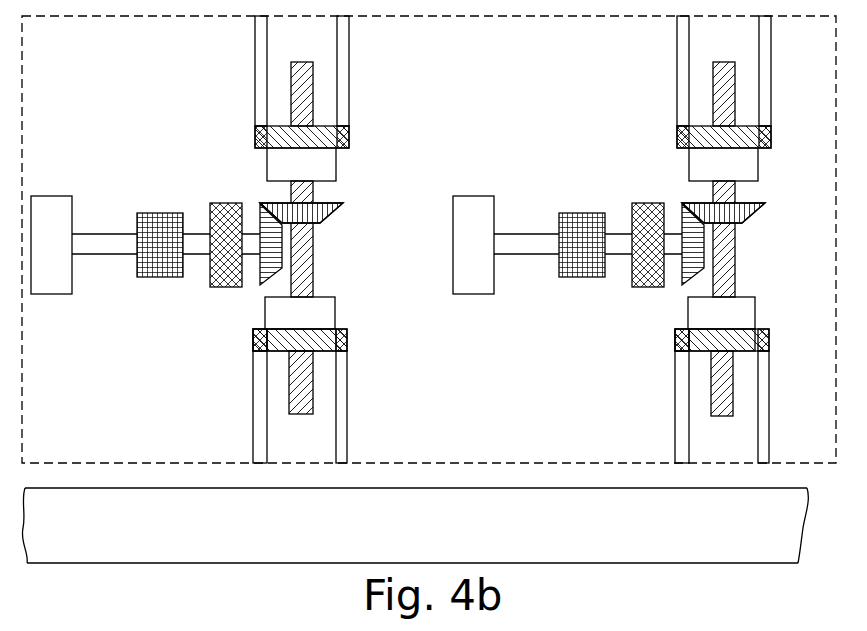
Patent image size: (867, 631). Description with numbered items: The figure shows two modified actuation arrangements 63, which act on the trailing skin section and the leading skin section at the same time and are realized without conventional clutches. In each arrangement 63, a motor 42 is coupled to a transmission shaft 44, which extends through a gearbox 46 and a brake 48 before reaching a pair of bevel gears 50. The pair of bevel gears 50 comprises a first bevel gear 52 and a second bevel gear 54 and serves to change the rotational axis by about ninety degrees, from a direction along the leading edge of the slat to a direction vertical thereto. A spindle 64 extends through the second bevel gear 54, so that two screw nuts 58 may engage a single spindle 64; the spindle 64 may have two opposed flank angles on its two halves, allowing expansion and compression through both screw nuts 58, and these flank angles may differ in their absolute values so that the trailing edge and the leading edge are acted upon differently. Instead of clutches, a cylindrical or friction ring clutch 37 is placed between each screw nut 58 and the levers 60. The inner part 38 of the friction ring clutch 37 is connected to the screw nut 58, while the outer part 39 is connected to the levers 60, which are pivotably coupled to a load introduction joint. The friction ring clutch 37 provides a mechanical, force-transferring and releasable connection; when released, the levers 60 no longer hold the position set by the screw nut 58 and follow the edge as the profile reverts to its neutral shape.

The friction ring clutch 37 is at (358, 133).
The inner part of friction ring clutch 38 is at (280, 352).
The outer part of friction ring clutch 39 is at (253, 340).
The motor 42 is at (52, 287).
The transmission shaft 44 is at (88, 245).
The gearbox 46 is at (153, 213).
The brake 48 is at (217, 205).
The pair of bevel gears 50 is at (322, 232).
The first bevel gear 52 is at (263, 207).
The second bevel gear 54 is at (343, 212).
The screw nut 58 is at (334, 313).
The lever 60 is at (253, 440).
The actuation arrangement 63 is at (171, 368).
The spindle 64 is at (312, 398).